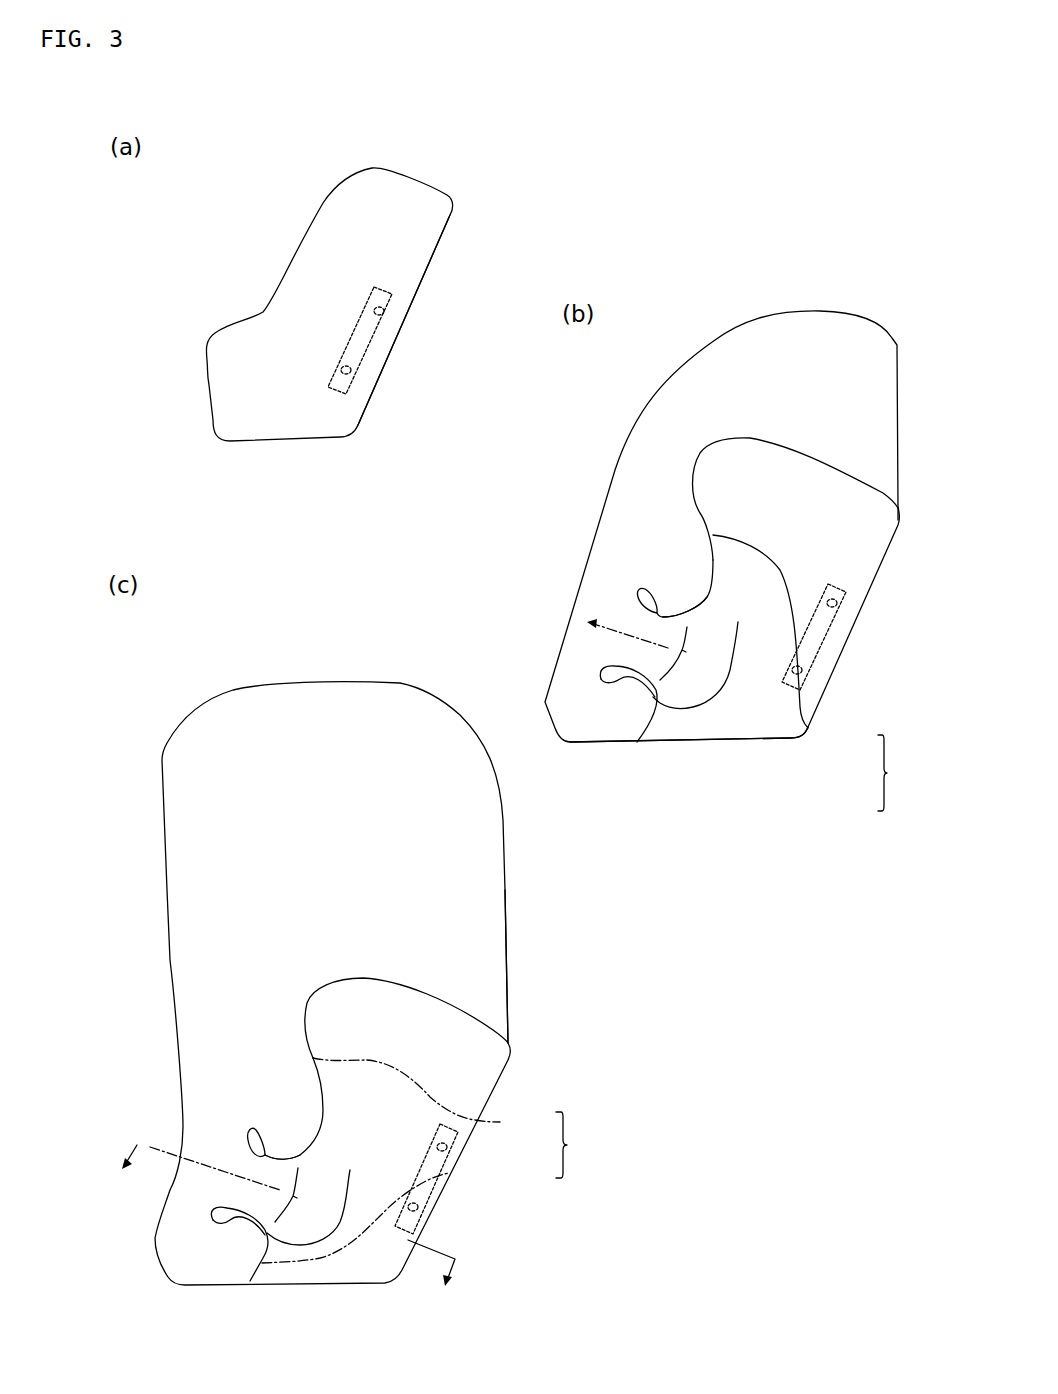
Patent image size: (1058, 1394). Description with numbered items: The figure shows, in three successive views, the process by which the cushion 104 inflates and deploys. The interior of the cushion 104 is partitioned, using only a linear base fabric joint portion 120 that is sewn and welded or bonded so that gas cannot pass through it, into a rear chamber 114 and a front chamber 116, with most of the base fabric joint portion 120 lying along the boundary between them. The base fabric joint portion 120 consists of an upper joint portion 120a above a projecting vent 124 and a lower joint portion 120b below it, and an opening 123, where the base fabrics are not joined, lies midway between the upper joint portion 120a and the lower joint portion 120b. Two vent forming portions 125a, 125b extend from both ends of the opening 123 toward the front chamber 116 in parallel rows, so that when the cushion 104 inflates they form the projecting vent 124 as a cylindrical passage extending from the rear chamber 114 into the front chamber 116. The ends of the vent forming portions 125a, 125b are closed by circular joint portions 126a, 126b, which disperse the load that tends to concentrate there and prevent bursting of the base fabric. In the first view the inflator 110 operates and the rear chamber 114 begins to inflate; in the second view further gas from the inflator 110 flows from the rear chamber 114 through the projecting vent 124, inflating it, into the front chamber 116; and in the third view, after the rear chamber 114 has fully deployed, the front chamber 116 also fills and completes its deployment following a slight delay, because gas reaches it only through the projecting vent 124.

The cushion 104 is at (247, 174).
The inflator 110 is at (372, 333).
The rear chamber 114 is at (420, 235).
The front chamber 116 is at (738, 328).
The base fabric joint portion 120 is at (742, 956).
The upper joint portion 120a is at (807, 730).
The lower joint portion 120b is at (640, 728).
The opening 123 is at (499, 924).
The projecting vent 124 is at (608, 648).
The vent forming portion 125a is at (664, 617).
The vent forming portion 125b is at (738, 630).
The circular joint portion 126a is at (645, 589).
The circular joint portion 126b is at (610, 688).